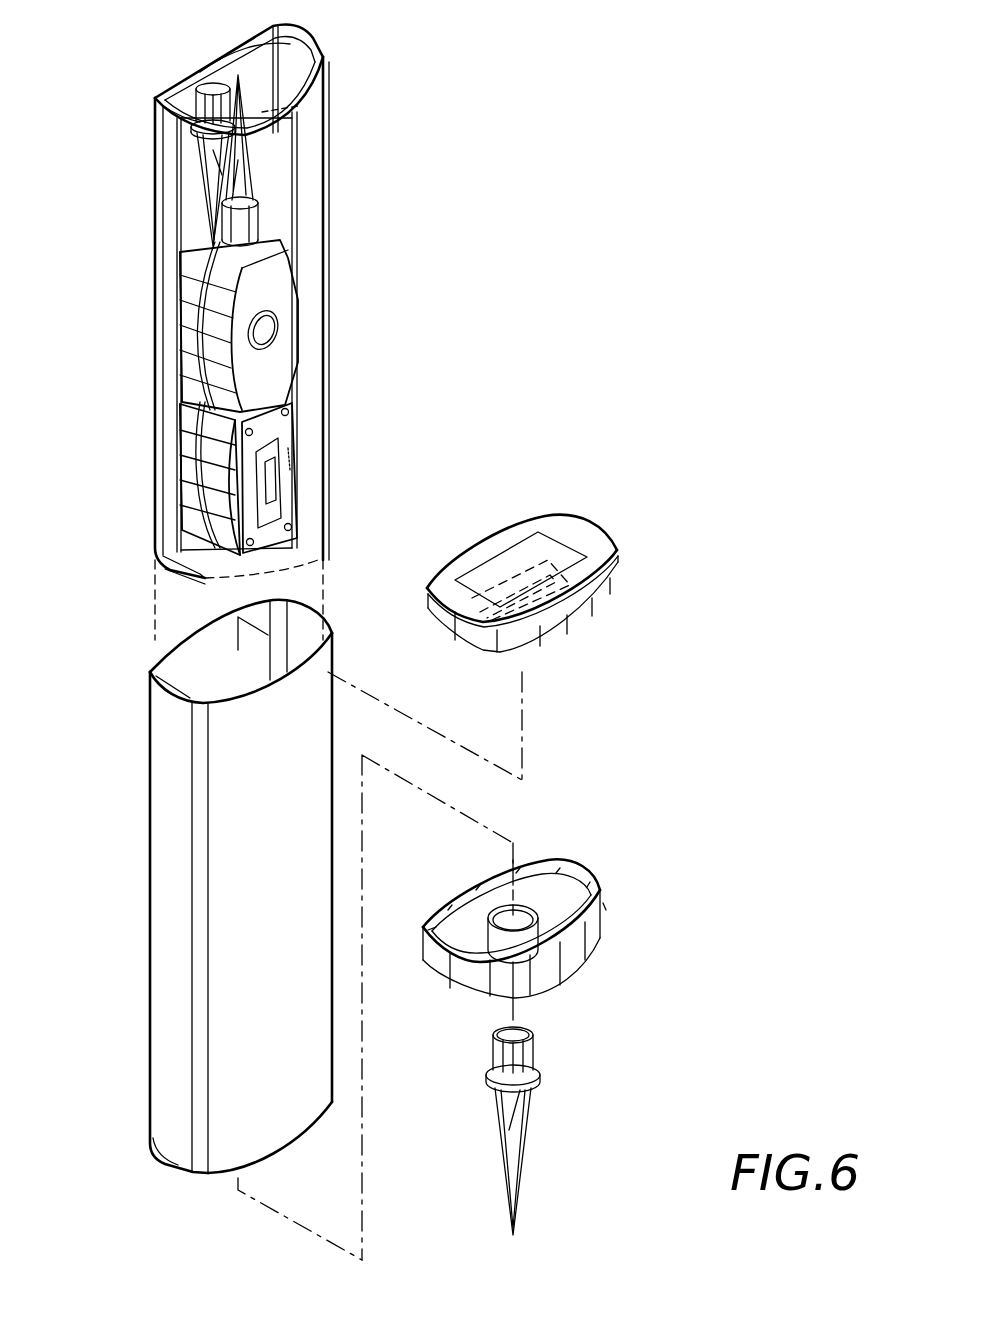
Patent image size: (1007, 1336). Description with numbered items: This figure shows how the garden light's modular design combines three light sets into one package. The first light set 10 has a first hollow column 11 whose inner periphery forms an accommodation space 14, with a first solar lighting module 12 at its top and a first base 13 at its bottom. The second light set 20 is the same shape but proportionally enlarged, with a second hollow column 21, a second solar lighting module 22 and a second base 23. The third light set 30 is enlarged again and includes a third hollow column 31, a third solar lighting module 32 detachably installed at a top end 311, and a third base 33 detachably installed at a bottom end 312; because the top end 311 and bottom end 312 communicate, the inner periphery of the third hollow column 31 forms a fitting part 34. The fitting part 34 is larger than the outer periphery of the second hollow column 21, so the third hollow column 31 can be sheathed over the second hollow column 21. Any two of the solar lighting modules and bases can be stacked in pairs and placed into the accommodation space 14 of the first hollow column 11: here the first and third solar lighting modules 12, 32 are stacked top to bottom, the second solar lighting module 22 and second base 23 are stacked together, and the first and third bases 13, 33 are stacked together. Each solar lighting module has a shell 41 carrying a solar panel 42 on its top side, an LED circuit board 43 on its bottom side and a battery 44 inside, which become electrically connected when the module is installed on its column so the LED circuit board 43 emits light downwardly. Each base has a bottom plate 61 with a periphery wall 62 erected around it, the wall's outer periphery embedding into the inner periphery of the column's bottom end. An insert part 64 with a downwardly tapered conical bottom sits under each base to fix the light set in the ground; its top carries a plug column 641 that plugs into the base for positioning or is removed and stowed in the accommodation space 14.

The first light set 10 is at (168, 82).
The first hollow column 11 is at (210, 585).
The first solar lighting module 12 is at (282, 556).
The first base 13 is at (190, 525).
The accommodation space 14 is at (248, 66).
The second light set 20 is at (318, 42).
The second hollow column 21 is at (185, 570).
The second solar lighting module 22 is at (190, 248).
The second base 23 is at (278, 310).
The third light set 30 is at (277, 930).
The third hollow column 31 is at (148, 863).
The top end 311 is at (333, 656).
The bottom end 312 is at (148, 1123).
The third solar lighting module 32 is at (531, 595).
The third base 33 is at (530, 933).
The fitting part 34 is at (185, 690).
The shell 41 is at (600, 597).
The solar panel 42 is at (500, 568).
The LED circuit board 43 is at (555, 640).
The battery 44 is at (485, 587).
The bottom plate 61 is at (600, 952).
The periphery wall 62 is at (470, 890).
The insert part 64 is at (200, 197).
The plug column 641 is at (532, 1045).